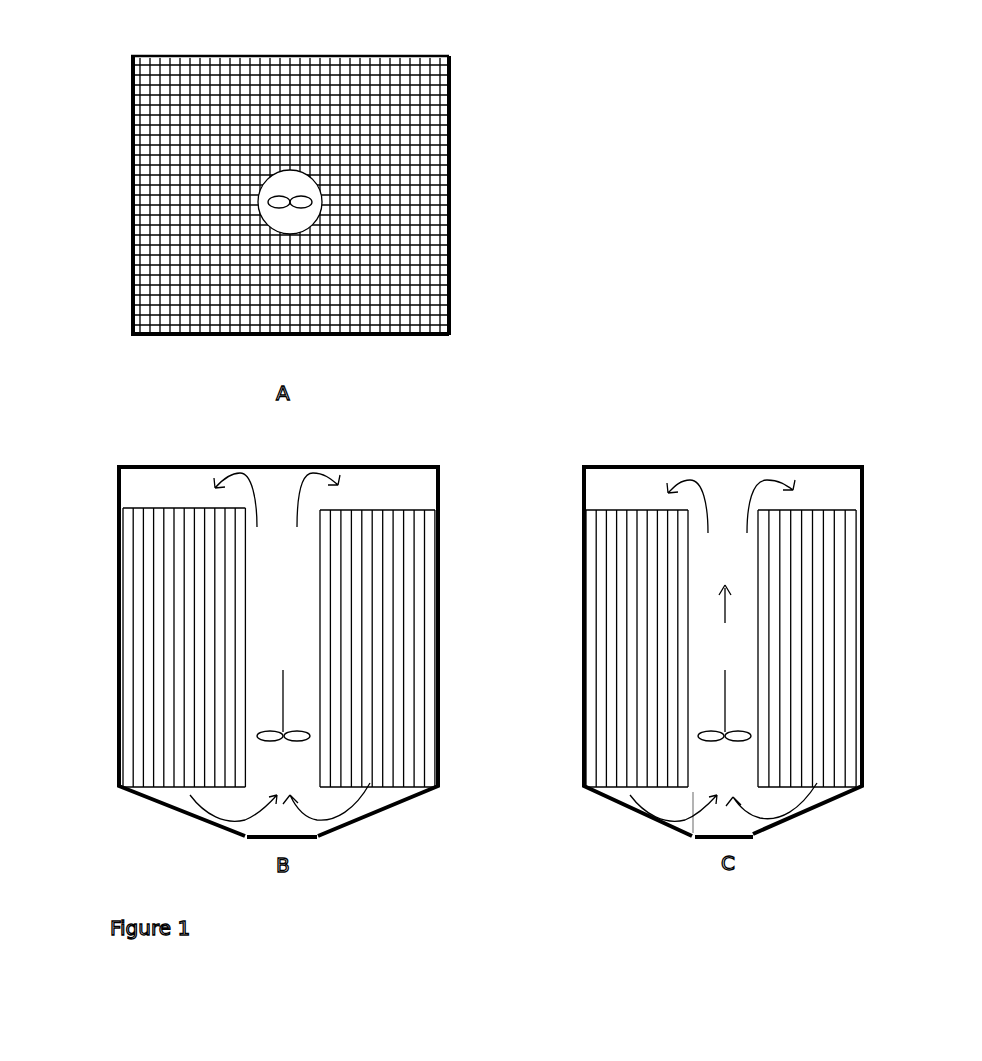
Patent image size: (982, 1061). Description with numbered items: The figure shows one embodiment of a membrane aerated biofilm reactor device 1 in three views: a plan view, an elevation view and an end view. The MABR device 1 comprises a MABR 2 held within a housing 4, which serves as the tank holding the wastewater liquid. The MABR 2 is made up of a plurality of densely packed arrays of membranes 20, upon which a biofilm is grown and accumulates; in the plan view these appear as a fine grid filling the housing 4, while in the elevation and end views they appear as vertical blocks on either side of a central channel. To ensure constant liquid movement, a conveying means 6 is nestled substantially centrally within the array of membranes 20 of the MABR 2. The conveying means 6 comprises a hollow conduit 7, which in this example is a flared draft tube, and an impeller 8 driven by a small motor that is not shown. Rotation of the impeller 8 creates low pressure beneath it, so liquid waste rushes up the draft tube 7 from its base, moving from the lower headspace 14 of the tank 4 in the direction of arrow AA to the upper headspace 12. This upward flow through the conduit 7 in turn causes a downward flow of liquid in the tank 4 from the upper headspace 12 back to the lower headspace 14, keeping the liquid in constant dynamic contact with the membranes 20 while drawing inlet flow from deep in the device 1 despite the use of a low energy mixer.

The MABR device 1 is at (527, 80).
The MABR 2 is at (420, 132).
The housing 4 is at (452, 188).
The conveying means 6 is at (322, 224).
The hollow conduit 7 is at (308, 217).
The impeller 8 is at (273, 208).
The upper headspace 12 is at (607, 475).
The lower headspace 14 is at (708, 827).
The membranes 20 is at (167, 217).
The arrow AA is at (345, 492).